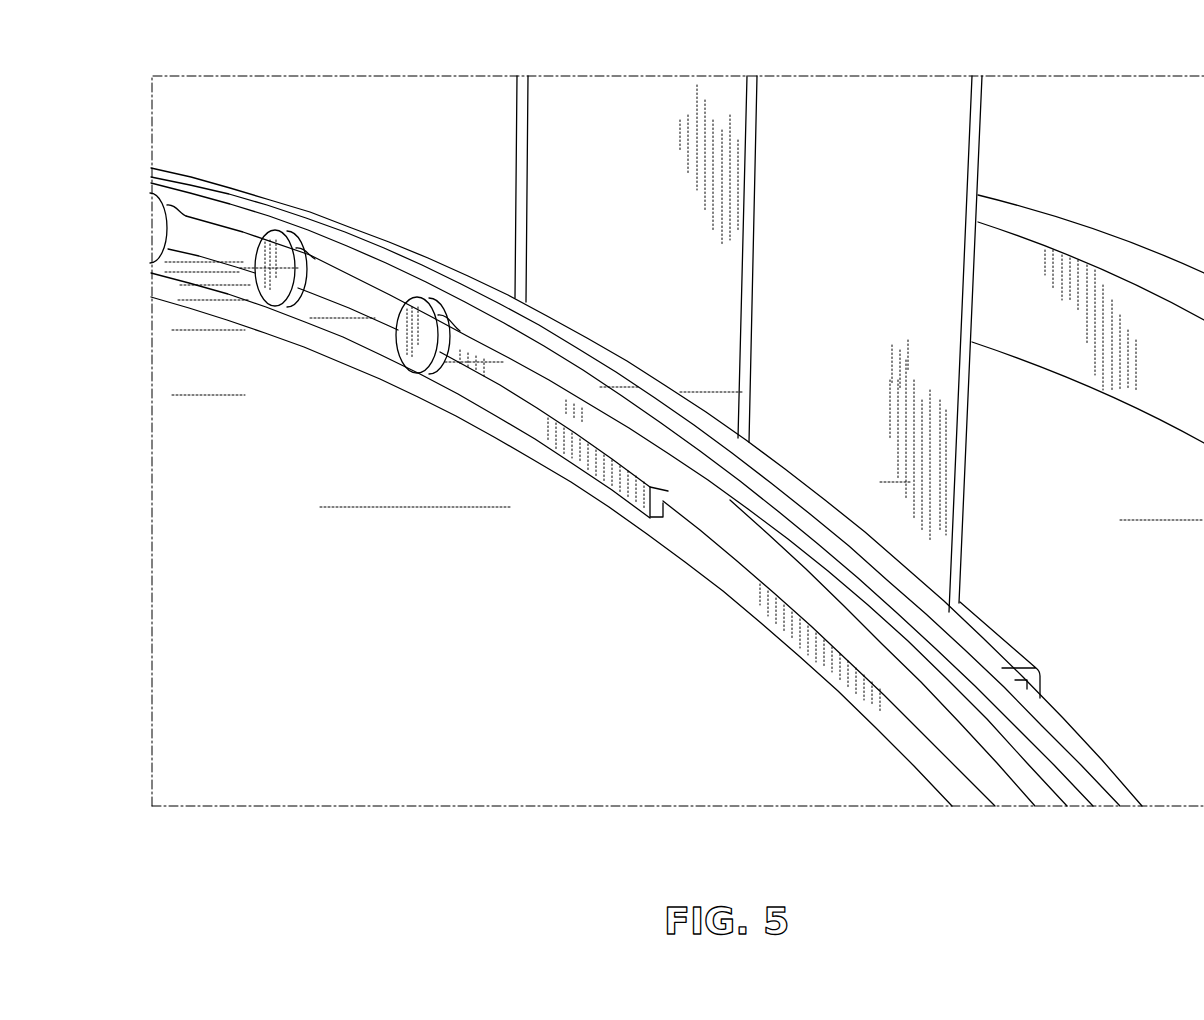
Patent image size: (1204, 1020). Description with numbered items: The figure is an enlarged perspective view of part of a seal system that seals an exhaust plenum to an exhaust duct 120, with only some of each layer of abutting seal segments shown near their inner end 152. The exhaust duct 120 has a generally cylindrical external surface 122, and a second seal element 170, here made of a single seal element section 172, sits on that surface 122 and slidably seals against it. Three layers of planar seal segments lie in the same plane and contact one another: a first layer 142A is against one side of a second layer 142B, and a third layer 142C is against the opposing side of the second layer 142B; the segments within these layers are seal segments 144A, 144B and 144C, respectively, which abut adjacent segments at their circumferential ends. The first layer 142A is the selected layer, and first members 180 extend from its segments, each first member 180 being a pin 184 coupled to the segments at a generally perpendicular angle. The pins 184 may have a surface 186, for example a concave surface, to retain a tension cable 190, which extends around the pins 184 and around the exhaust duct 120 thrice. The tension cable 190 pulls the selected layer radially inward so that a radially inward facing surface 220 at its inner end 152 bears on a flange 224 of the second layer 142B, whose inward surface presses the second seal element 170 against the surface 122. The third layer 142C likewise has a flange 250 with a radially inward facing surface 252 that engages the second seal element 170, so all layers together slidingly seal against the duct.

The exhaust duct 120 is at (623, 788).
The external surface 122 is at (736, 777).
The first layer 142A is at (292, 166).
The second layer 142B is at (550, 102).
The third layer 142C is at (810, 104).
The seal segments 144A is at (395, 125).
The seal segments 144B is at (686, 102).
The seal segments 144C is at (945, 112).
The inner end 152 is at (732, 95).
The second seal element 170 is at (914, 720).
The seal element section 172 is at (1005, 792).
The first member 180 is at (283, 307).
The pin 184 is at (428, 335).
The surface 186 is at (188, 215).
The tension cable 190 is at (1097, 790).
The radially inward facing surface 220 is at (635, 455).
The flange 224 is at (596, 464).
The flange 250 is at (990, 638).
The radially inward facing surface 252 is at (1021, 684).